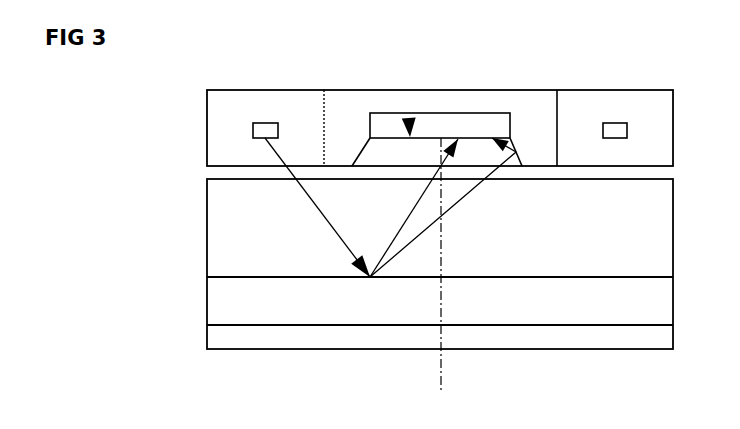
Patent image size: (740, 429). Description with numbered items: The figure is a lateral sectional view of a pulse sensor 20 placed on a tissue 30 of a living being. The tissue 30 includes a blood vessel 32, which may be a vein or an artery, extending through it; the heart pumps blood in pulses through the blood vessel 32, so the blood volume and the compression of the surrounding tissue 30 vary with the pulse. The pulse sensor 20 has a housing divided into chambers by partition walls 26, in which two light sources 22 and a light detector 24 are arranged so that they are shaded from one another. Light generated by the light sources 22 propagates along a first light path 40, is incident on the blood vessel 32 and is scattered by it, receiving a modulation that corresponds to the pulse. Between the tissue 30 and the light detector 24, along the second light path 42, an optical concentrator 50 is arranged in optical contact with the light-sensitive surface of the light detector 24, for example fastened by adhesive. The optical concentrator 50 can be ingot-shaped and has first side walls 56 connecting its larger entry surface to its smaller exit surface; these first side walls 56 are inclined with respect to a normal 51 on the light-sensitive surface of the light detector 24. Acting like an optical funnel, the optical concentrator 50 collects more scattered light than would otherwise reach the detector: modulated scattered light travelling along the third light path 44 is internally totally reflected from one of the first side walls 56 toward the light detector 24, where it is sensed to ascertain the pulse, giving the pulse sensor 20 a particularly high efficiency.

The pulse sensor 20 is at (192, 127).
The light sources 22 is at (262, 122).
The light detector 24 is at (478, 112).
The partition walls 26 is at (323, 118).
The tissue 30 is at (192, 229).
The blood vessel 32 is at (258, 318).
The first light path 40 is at (320, 210).
The second light path 42 is at (404, 219).
The third light path 44 is at (457, 206).
The optical concentrator 50 is at (406, 118).
The normal 51 is at (443, 362).
The first side walls 56 is at (366, 143).